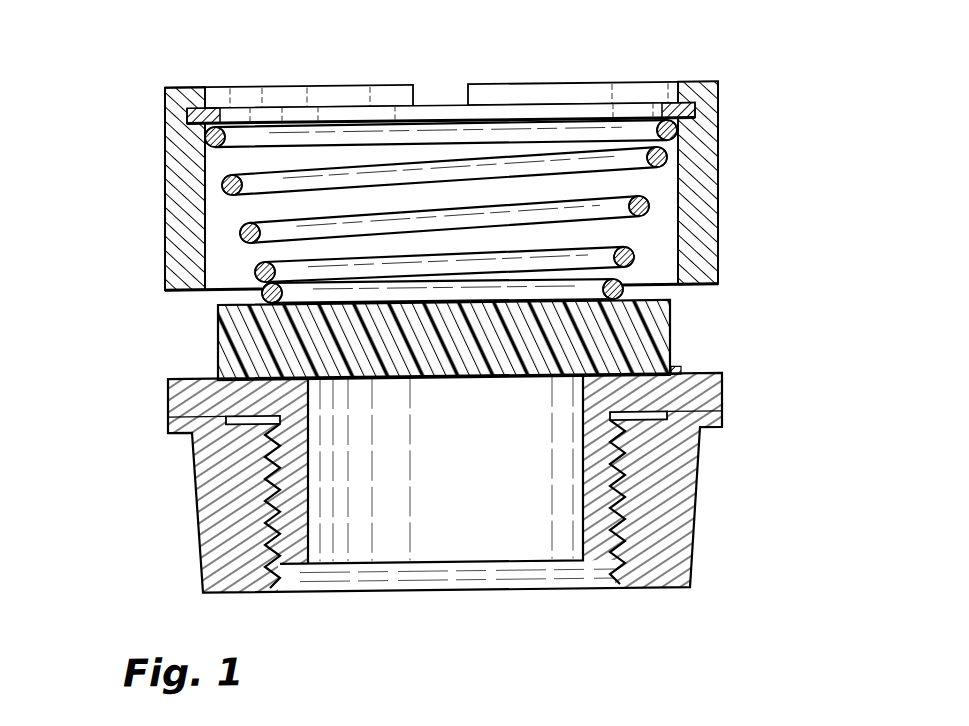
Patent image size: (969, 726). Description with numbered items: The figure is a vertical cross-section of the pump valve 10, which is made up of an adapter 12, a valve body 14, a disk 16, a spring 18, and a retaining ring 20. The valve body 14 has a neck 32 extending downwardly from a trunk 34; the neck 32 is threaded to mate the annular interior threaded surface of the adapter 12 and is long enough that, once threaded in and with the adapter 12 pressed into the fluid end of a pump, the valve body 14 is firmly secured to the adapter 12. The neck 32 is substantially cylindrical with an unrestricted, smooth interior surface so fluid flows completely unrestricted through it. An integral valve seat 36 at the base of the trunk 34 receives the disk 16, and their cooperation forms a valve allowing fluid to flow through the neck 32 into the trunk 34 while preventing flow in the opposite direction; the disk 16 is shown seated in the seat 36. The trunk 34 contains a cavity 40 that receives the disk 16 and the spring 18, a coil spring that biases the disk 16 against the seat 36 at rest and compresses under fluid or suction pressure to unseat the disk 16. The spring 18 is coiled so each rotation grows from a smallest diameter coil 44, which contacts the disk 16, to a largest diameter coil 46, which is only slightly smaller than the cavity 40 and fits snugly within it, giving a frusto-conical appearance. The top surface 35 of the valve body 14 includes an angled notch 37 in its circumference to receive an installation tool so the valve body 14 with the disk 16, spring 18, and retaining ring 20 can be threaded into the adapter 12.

The pump valve 10 is at (103, 103).
The adapter 12 is at (695, 526).
The valve body 14 is at (745, 82).
The disk 16 is at (670, 350).
The spring 18 is at (240, 231).
The retaining ring 20 is at (689, 118).
The neck 32 is at (278, 490).
The trunk 34 is at (167, 174).
The top surface 35 is at (185, 87).
The valve seat 36 is at (677, 374).
The notch 37 is at (463, 90).
The cavity 40 is at (650, 244).
The smallest diameter coil 44 is at (622, 295).
The largest diameter coil 46 is at (648, 150).